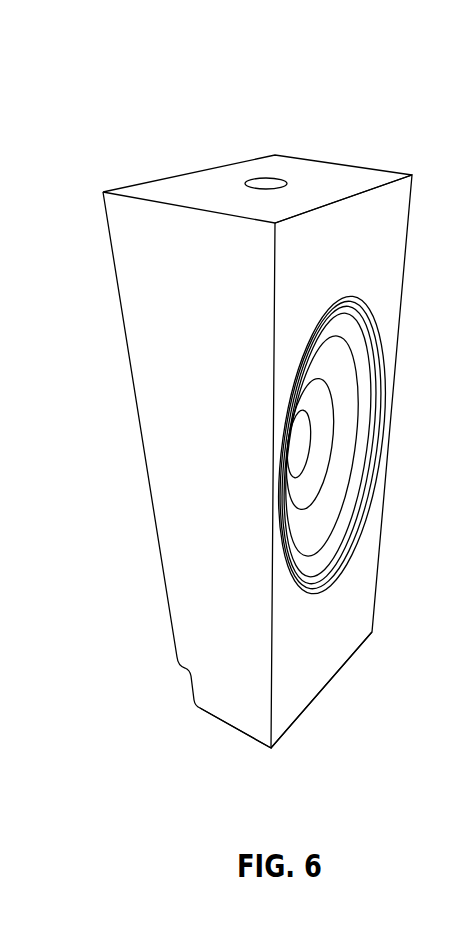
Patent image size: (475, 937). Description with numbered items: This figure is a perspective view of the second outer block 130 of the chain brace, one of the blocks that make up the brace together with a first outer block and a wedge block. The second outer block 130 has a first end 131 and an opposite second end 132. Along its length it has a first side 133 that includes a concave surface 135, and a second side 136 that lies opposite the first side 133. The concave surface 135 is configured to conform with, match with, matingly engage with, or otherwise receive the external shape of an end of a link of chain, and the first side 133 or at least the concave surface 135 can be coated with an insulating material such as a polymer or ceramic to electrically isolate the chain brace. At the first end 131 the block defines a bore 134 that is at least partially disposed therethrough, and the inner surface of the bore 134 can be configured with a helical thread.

The second outer block 130 is at (229, 436).
The first end 131 is at (217, 181).
The second end 132 is at (230, 727).
The first side 133 is at (320, 667).
The bore 134 is at (270, 180).
The concave surface 135 is at (357, 502).
The second side 136 is at (148, 514).